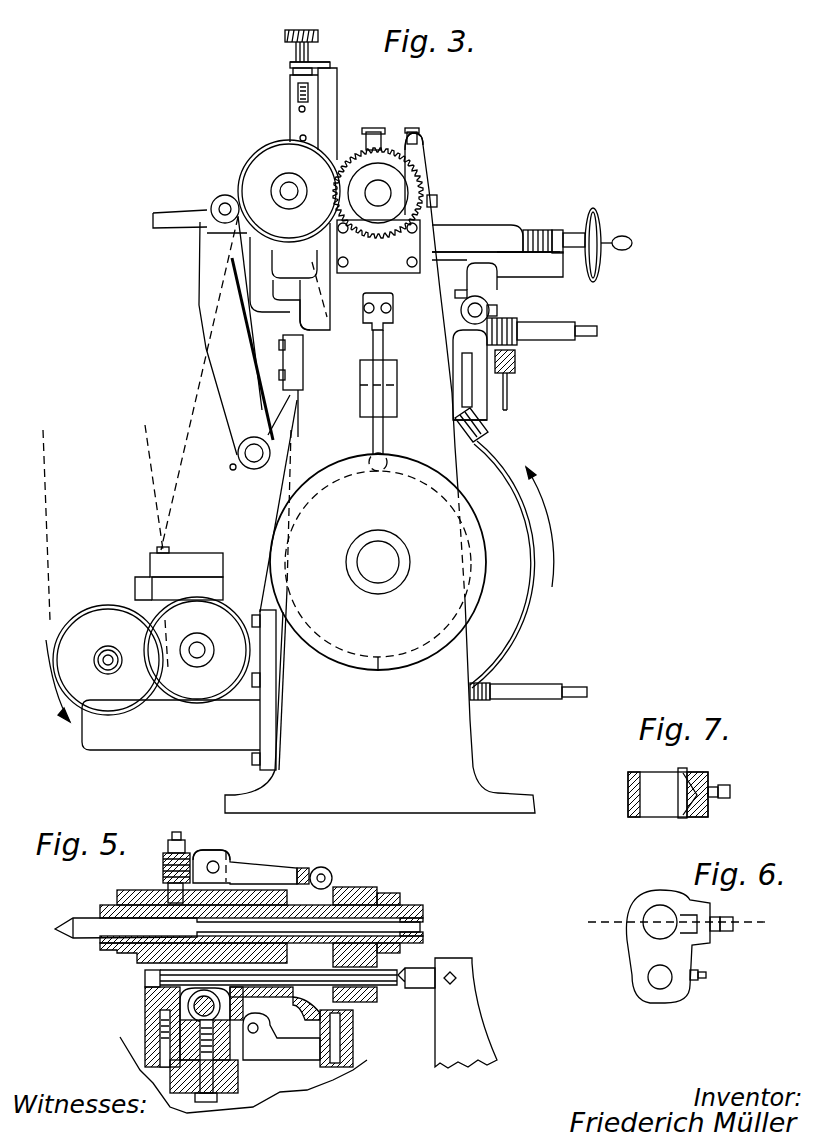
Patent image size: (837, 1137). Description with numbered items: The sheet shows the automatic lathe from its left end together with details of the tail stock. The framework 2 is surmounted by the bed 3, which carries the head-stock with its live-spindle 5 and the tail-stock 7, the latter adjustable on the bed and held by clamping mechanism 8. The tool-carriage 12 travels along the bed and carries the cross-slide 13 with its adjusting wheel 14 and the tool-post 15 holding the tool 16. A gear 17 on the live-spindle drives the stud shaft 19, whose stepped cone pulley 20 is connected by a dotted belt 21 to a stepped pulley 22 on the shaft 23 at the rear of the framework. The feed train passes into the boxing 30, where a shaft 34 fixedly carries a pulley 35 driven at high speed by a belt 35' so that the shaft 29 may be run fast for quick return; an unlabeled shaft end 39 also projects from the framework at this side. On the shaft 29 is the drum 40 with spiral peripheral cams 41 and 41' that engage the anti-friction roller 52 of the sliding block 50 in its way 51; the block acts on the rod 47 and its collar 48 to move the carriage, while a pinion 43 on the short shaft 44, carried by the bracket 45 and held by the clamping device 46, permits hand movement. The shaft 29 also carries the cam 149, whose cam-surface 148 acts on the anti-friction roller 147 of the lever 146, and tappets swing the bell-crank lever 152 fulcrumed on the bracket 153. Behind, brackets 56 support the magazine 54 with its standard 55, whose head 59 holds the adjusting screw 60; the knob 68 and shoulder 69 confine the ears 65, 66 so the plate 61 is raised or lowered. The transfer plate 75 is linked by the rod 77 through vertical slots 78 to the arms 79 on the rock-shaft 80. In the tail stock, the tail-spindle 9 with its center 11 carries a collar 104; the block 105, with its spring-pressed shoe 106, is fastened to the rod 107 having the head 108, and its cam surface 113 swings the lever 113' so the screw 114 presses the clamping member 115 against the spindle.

In FIG. 3, the framework 2 is at (380, 470).
In FIG. 3, the bed 3 is at (450, 290).
In FIG. 3, the live-spindle 5 is at (400, 183).
In FIG. 3, the tool-carriage 12 is at (443, 270).
In FIG. 3, the cross-slide 13 is at (496, 242).
In FIG. 3, the adjusting wheel 14 is at (597, 223).
In FIG. 3, the tool-post 15 is at (413, 155).
In FIG. 3, the tool 16 is at (440, 197).
In FIG. 3, the gear 17 is at (393, 147).
In FIG. 3, the stud shaft 19 is at (289, 191).
In FIG. 3, the stepped cone pulley 20 is at (289, 205).
In FIG. 3, the belt 21 is at (166, 517).
In FIG. 3, the stepped pulley 22 is at (197, 650).
In FIG. 3, the shaft 23 is at (200, 651).
In FIG. 3, the shaft 29 is at (378, 573).
In FIG. 3, the boxing 30 is at (171, 725).
In FIG. 3, the shaft 34 is at (110, 664).
In FIG. 3, the pulley 35 is at (108, 635).
In FIG. 3, the belt 35' is at (83, 576).
In FIG. 3, the shaft 39 is at (570, 686).
In FIG. 3, the drum 40 is at (520, 593).
In FIG. 3, the peripheral cam 41 is at (527, 556).
In FIG. 3, the peripheral cam 41' is at (581, 564).
In FIG. 3, the pinion 43 is at (473, 330).
In FIG. 3, the short shaft 44 is at (597, 334).
In FIG. 3, the bracket 45 is at (517, 353).
In FIG. 3, the clamping device 46 is at (510, 373).
In FIG. 3, the rod 47 is at (460, 308).
In FIG. 3, the adjustable projection 48 is at (497, 308).
In FIG. 3, the sliding block 50 is at (487, 427).
In FIG. 3, the way 51 is at (463, 378).
In FIG. 3, the anti-friction roller 52 is at (485, 437).
In FIG. 3, the magazine 54 is at (288, 108).
In FIG. 3, the standard 55 is at (302, 120).
In FIG. 3, the bracket 56 is at (250, 315).
In FIG. 3, the head 59 is at (293, 72).
In FIG. 3, the adjusting screw 60 is at (308, 93).
In FIG. 3, the plate 61 is at (328, 120).
In FIG. 3, the ear 65 is at (290, 66).
In FIG. 3, the ear 66 is at (315, 65).
In FIG. 3, the knob 68 is at (301, 21).
In FIG. 3, the shoulder 69 is at (290, 68).
In FIG. 3, the plate 75 is at (167, 227).
In FIG. 3, the rod 77 is at (213, 204).
In FIG. 3, the vertical slot 78 is at (222, 208).
In FIG. 3, the arm 79 is at (227, 373).
In FIG. 3, the rock-shaft 80 is at (254, 453).
In FIG. 3, the lever 146 is at (372, 345).
In FIG. 3, the anti-friction roller 147 is at (378, 472).
In FIG. 3, the cam-surface 148 is at (324, 480).
In FIG. 3, the cam 149 is at (378, 657).
In FIG. 3, the bell-crank lever 152 is at (186, 573).
In FIG. 3, the bracket 153 is at (147, 580).
In FIG. 5, the tail-stock 7 is at (256, 1036).
In FIG. 6, the tail-stock 7 is at (679, 921).
In FIG. 5, the clamping mechanism 8 is at (220, 1087).
In FIG. 5, the tail-spindle 9 is at (420, 910).
In FIG. 5, the center 11 is at (78, 935).
In FIG. 5, the collar 104 is at (390, 893).
In FIG. 5, the block 105 is at (628, 798).
In FIG. 7, the block 105 is at (679, 793).
In FIG. 6, the block 105 is at (679, 946).
In FIG. 7, the shoe 106 is at (680, 797).
In FIG. 6, the shoe 106 is at (687, 928).
In FIG. 5, the rod 107 is at (420, 990).
In FIG. 5, the head 108 is at (457, 1020).
In FIG. 5, the cam surface 113 is at (282, 857).
In FIG. 5, the lever 113' is at (243, 844).
In FIG. 5, the screw 114 is at (174, 830).
In FIG. 5, the clamping member 115 is at (160, 882).